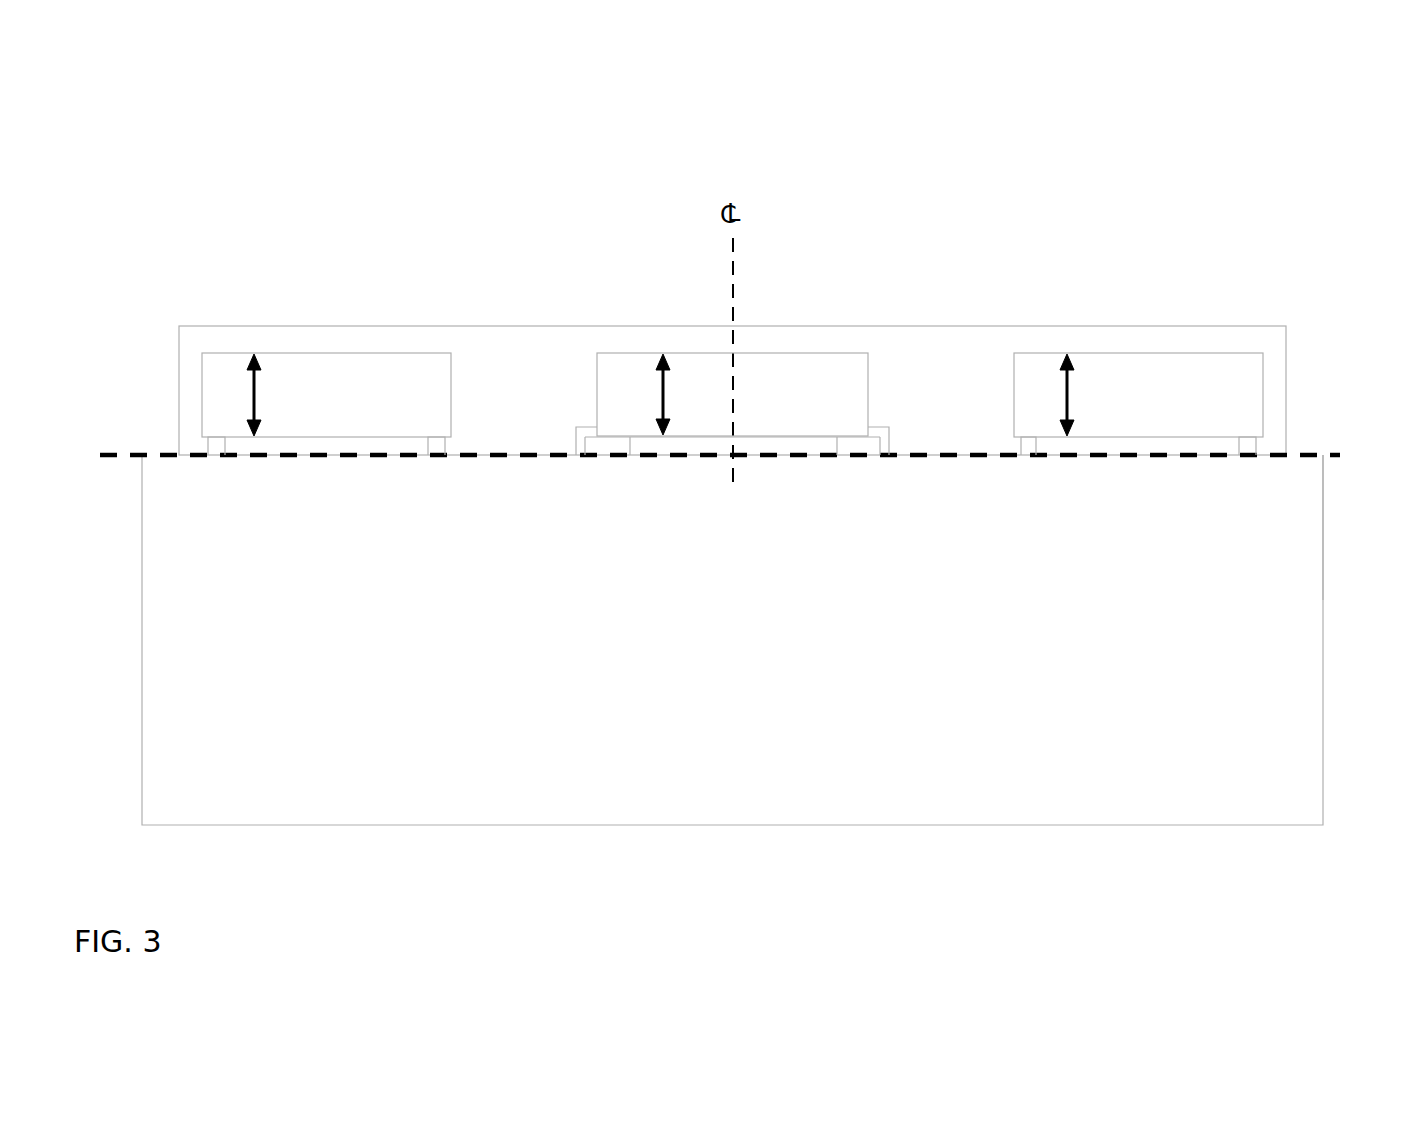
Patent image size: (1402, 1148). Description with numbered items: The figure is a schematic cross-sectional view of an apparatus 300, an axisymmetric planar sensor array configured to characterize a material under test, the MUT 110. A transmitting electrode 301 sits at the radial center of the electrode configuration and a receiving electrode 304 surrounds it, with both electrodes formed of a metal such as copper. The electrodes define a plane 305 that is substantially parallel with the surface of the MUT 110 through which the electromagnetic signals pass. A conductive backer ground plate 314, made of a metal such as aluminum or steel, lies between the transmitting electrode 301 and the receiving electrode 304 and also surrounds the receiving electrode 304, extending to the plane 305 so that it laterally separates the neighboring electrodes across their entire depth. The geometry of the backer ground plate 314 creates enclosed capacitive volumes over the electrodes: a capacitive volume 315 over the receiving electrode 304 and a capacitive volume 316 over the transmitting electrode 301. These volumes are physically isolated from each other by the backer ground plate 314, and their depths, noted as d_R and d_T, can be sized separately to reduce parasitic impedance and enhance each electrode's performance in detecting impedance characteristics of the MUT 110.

The apparatus 300 is at (265, 130).
The MUT 110 is at (812, 631).
The transmitting electrode 301 is at (789, 466).
The receiving electrode 304 is at (280, 463).
The plane 305 is at (1342, 468).
The backer ground plate 314 is at (545, 408).
The capacitive volume V_R 315 is at (271, 341).
The capacitive volume V_T 316 is at (826, 339).